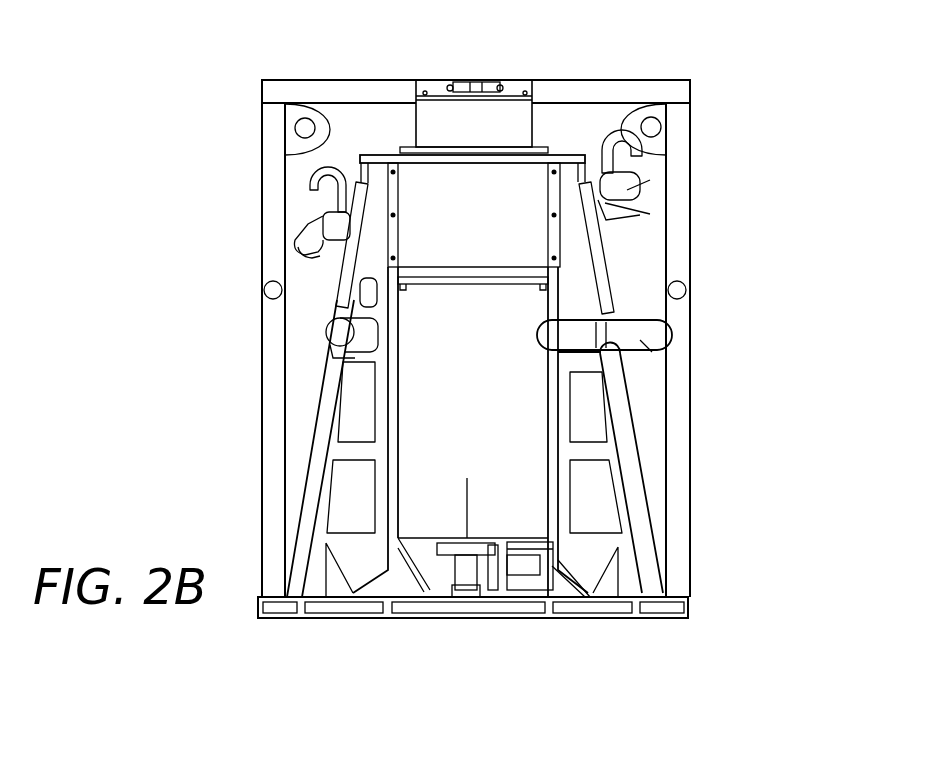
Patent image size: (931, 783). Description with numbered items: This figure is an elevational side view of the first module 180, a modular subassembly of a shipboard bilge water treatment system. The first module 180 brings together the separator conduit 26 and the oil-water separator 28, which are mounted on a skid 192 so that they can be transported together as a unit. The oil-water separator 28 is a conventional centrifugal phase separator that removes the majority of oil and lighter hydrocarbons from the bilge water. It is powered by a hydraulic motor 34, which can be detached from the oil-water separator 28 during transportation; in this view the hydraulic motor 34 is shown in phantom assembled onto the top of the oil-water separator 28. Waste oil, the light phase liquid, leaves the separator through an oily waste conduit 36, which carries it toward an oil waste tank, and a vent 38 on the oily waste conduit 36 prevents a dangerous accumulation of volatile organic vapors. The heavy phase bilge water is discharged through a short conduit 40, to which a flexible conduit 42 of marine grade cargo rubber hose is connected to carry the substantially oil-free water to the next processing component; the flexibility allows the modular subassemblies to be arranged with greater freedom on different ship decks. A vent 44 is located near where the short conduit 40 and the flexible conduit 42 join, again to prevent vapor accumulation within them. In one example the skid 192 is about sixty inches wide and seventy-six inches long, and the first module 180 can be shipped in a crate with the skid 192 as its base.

The first module 180 is at (476, 338).
The skid 192 is at (655, 607).
The hydraulic motor 34 is at (463, 122).
The oil-water separator 28 is at (440, 242).
The vent 38 is at (330, 164).
The oily waste conduit 36 is at (337, 210).
The vent 44 is at (613, 128).
The flexible conduit 42 is at (625, 193).
The short conduit 40 is at (600, 203).
The separator conduit 26 is at (640, 338).